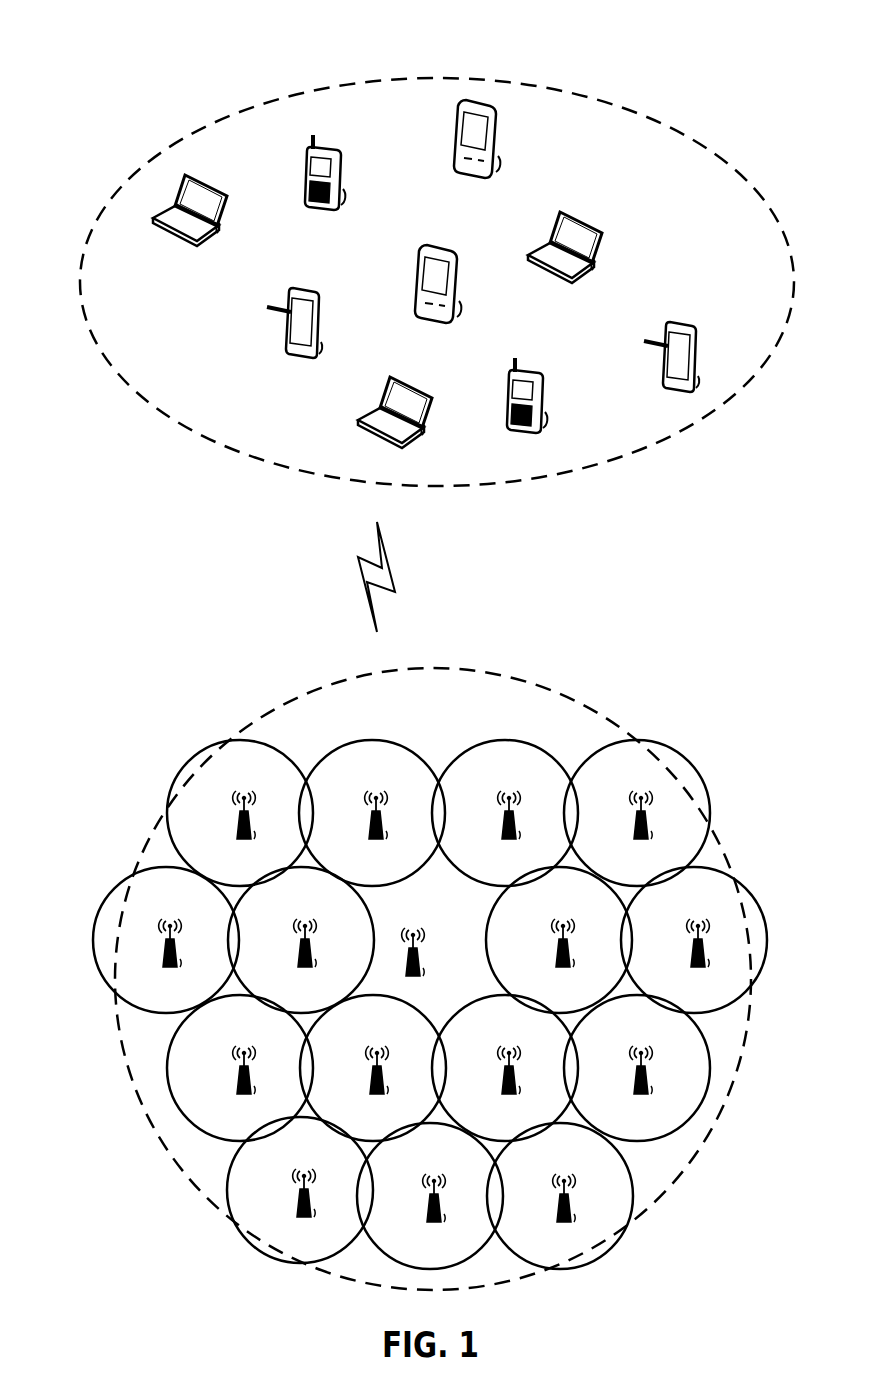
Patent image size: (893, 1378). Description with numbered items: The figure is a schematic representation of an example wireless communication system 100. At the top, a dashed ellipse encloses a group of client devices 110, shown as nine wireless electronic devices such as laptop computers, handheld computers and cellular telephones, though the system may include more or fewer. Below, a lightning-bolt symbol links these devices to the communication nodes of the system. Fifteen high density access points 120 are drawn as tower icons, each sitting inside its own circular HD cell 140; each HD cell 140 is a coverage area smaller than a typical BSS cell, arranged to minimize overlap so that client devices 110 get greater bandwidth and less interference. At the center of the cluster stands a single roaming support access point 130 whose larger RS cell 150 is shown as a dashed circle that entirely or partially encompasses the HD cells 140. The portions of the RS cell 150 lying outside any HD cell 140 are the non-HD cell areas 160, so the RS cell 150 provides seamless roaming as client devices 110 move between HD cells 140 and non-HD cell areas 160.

The wireless communication system 100 is at (93, 37).
The client devices 110 is at (432, 80).
The high density access point 120 is at (378, 760).
The roaming support access point 130 is at (414, 925).
The HD cell 140 is at (377, 738).
The RS cell 150 is at (433, 668).
The non-HD cell areas 160 is at (541, 697).